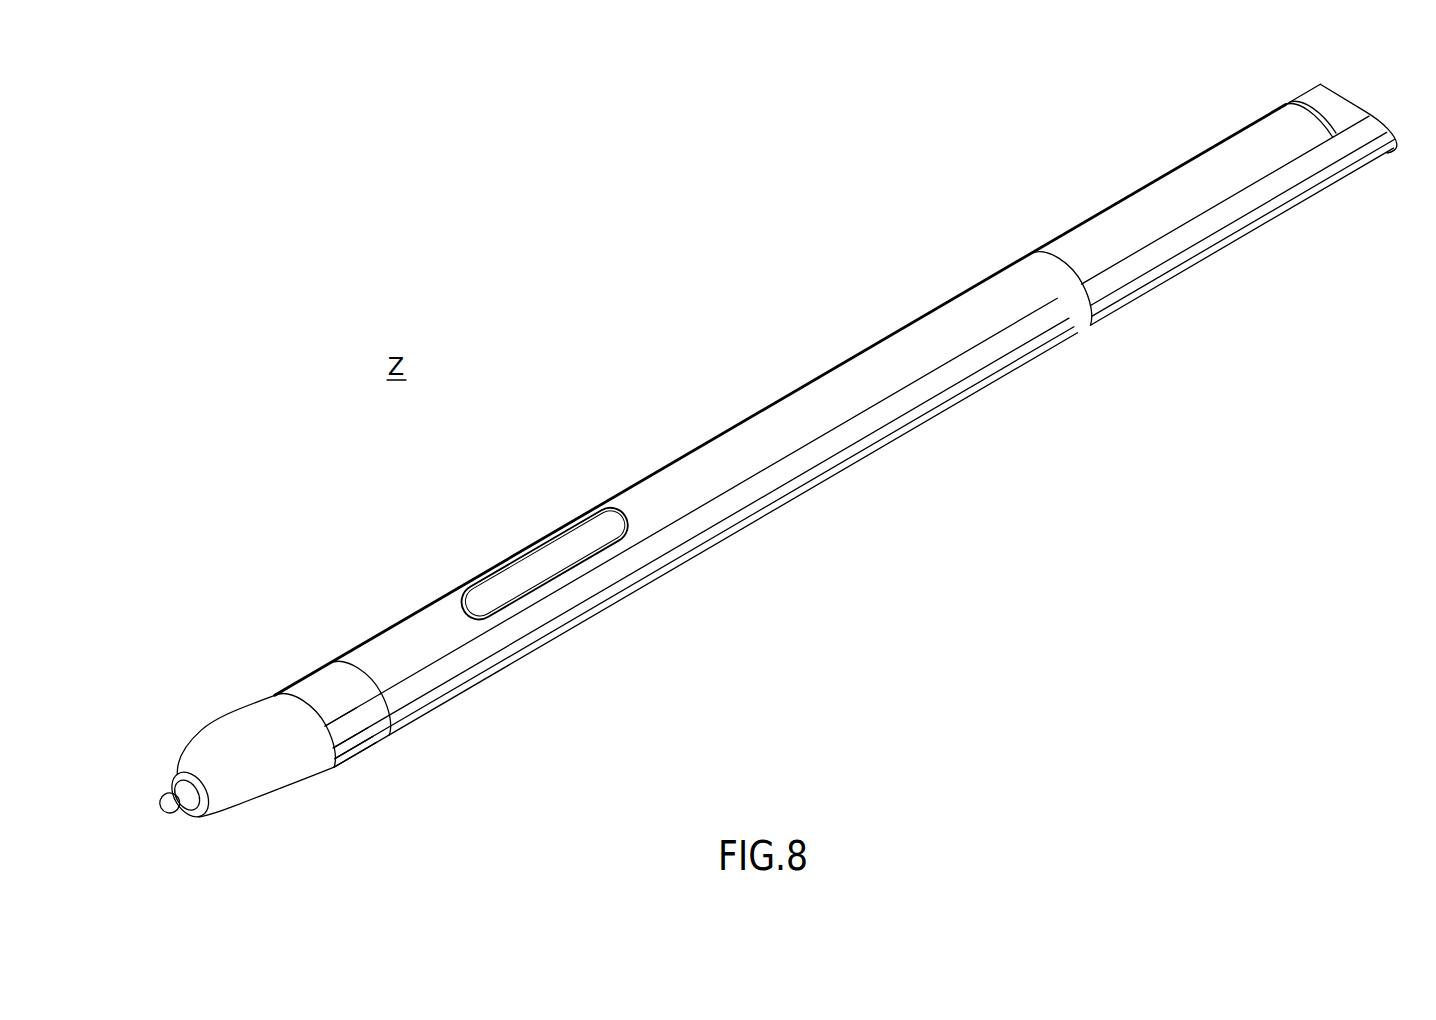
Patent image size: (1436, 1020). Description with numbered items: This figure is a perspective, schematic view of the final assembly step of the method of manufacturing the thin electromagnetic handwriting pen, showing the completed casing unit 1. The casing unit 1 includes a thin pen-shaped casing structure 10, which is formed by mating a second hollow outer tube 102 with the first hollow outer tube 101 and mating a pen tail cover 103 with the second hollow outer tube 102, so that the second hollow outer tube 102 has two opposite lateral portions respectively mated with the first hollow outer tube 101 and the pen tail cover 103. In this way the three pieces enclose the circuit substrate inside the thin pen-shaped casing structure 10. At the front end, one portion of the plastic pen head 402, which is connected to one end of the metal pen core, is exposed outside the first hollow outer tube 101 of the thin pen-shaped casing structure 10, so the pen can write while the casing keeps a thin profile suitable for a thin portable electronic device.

The casing unit 1 is at (202, 613).
The thin pen-shaped casing structure 10 is at (212, 719).
The first hollow outer tube 101 is at (322, 690).
The second hollow outer tube 102 is at (728, 457).
The pen tail cover 103 is at (1193, 188).
The plastic pen head 402 is at (167, 802).